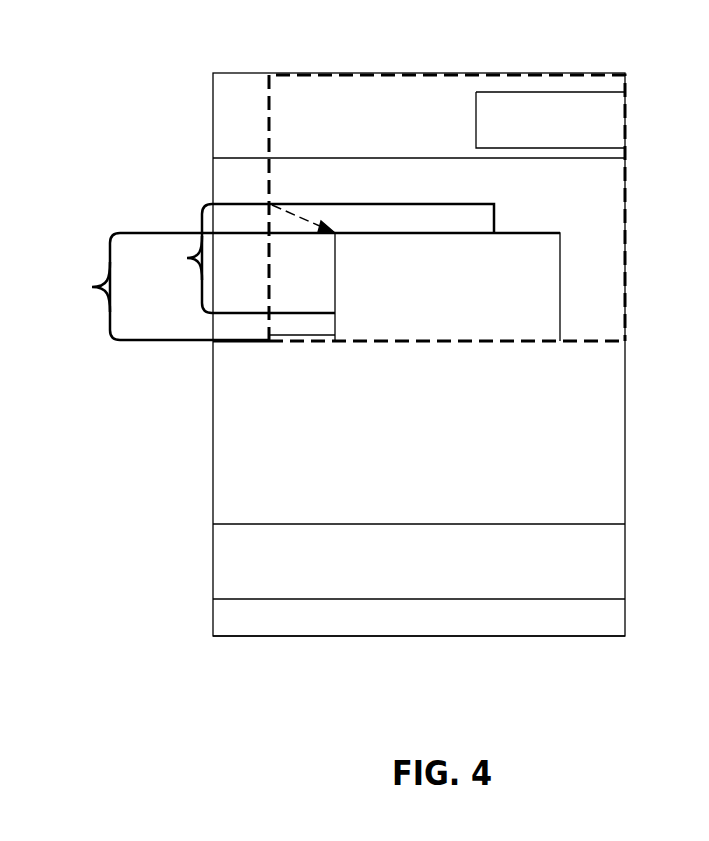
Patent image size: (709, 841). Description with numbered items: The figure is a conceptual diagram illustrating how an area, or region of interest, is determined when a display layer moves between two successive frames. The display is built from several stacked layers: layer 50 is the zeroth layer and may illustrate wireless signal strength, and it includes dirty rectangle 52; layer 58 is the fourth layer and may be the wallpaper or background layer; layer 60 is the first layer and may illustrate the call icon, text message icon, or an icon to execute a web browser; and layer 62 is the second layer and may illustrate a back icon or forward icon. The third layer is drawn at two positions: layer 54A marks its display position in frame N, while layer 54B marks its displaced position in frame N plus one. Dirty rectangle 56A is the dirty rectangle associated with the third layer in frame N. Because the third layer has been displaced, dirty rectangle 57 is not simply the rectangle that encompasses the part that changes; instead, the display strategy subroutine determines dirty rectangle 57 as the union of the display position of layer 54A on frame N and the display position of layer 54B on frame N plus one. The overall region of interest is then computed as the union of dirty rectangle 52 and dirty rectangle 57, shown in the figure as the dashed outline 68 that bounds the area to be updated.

The layer 50 is at (231, 82).
The dirty rectangle 52 is at (512, 105).
The third layer 54A is at (313, 258).
The third layer 54B is at (299, 286).
The dirty rectangle 56A is at (454, 210).
The dirty rectangle 57 is at (290, 325).
The layer 58 is at (615, 368).
The layer 60 is at (615, 575).
The layer 62 is at (620, 622).
The cell region 68 is at (607, 228).